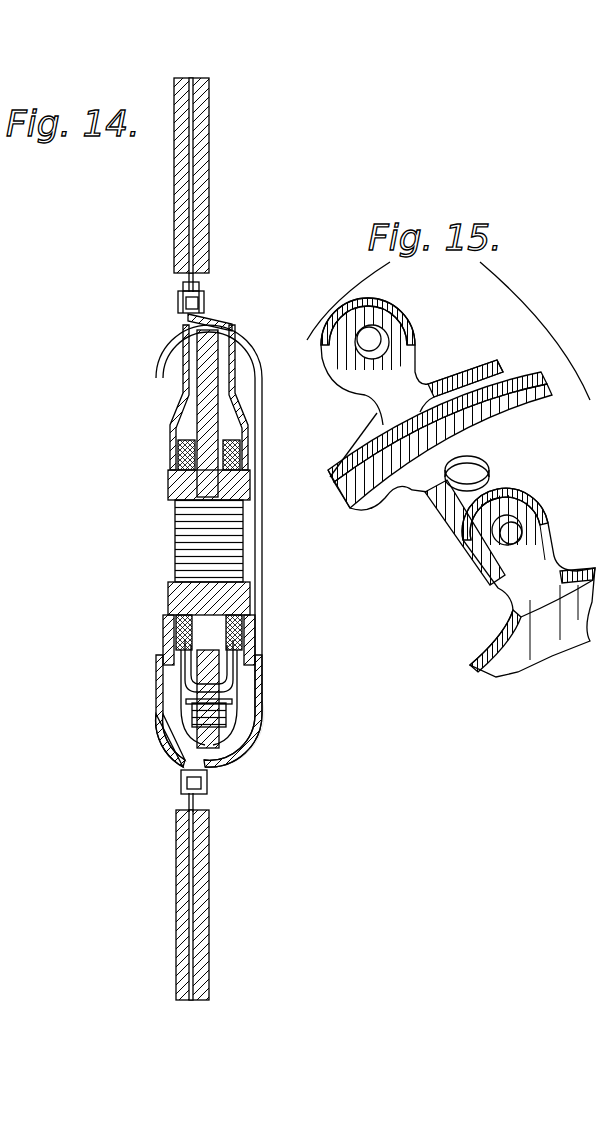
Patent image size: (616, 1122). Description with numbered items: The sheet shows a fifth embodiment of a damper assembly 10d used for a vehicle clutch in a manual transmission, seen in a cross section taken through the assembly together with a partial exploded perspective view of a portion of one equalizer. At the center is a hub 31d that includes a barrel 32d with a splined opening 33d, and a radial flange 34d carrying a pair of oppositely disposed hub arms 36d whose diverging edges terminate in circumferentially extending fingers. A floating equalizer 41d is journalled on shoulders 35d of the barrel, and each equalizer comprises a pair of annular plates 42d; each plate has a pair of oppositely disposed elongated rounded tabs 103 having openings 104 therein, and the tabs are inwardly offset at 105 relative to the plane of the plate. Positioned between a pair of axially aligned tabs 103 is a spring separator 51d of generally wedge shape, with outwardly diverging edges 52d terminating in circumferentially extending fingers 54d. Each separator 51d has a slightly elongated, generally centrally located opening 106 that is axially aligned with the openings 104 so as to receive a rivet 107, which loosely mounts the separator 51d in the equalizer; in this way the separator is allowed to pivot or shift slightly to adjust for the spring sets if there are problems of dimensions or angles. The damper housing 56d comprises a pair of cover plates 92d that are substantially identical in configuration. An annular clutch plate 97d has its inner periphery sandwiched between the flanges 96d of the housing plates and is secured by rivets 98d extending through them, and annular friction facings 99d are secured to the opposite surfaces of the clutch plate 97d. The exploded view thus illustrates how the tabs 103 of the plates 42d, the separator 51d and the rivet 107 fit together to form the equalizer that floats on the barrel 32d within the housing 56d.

In FIG. 14, the damper assembly 10d is at (152, 352).
In FIG. 14, the hub 31d is at (168, 479).
In FIG. 14, the barrel 32d is at (168, 597).
In FIG. 14, the splined opening 33d is at (178, 532).
In FIG. 14, the radial flange 34d is at (183, 655).
In FIG. 14, the shoulders 35d is at (258, 458).
In FIG. 14, the hub arms 36d is at (214, 325).
In FIG. 14, the floating equalizer 41d is at (188, 688).
In FIG. 14, the annular plate 42d is at (163, 622).
In FIG. 15, the annular plate 42d is at (390, 505).
In FIG. 14, the spring separator 51d is at (258, 665).
In FIG. 15, the spring separator 51d is at (508, 450).
In FIG. 15, the diverging edges 52d is at (498, 478).
In FIG. 15, the fingers 54d is at (500, 360).
In FIG. 14, the damper housing 56d is at (250, 764).
In FIG. 14, the cover plates 92d is at (168, 428).
In FIG. 14, the flanges 96d is at (228, 272).
In FIG. 14, the clutch plate 97d is at (182, 228).
In FIG. 14, the rivets 98d is at (178, 302).
In FIG. 14, the friction facings 99d is at (190, 168).
In FIG. 14, the tabs 103 is at (170, 748).
In FIG. 15, the tabs 103 is at (400, 338).
In FIG. 15, the openings 104 is at (372, 330).
In FIG. 14, the offset 105 is at (188, 690).
In FIG. 15, the opening 106 is at (447, 490).
In FIG. 14, the rivet 107 is at (255, 712).